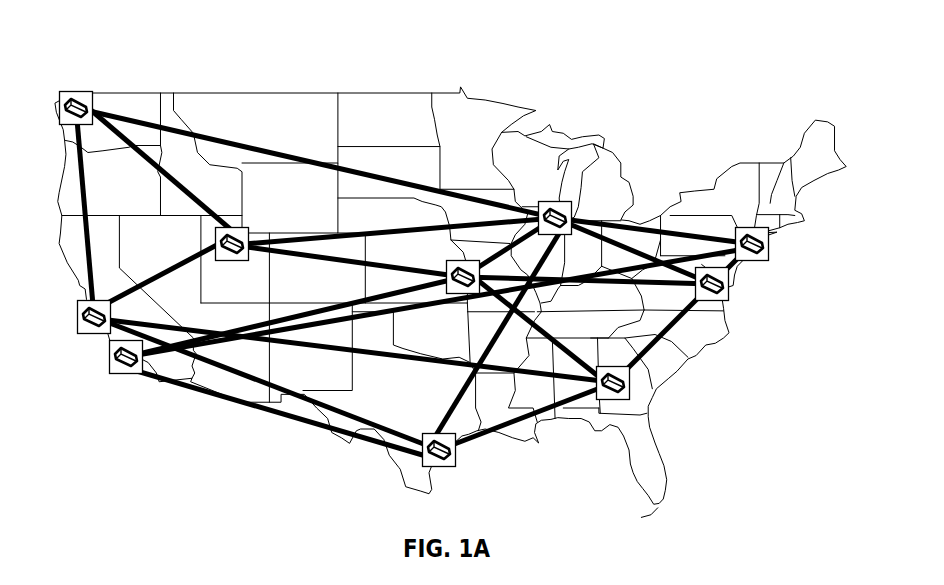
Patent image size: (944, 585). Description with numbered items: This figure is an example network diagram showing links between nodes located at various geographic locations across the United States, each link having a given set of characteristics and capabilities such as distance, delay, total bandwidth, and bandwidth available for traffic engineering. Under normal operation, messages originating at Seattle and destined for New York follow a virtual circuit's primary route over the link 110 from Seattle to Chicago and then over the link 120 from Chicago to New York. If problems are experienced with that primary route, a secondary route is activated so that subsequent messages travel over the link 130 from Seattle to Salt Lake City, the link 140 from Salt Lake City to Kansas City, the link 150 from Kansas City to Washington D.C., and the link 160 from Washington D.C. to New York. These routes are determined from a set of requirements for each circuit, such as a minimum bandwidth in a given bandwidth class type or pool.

The link 110 is at (237, 140).
The link 120 is at (632, 220).
The link 130 is at (140, 150).
The link 140 is at (345, 262).
The link 150 is at (662, 282).
The link 160 is at (742, 278).